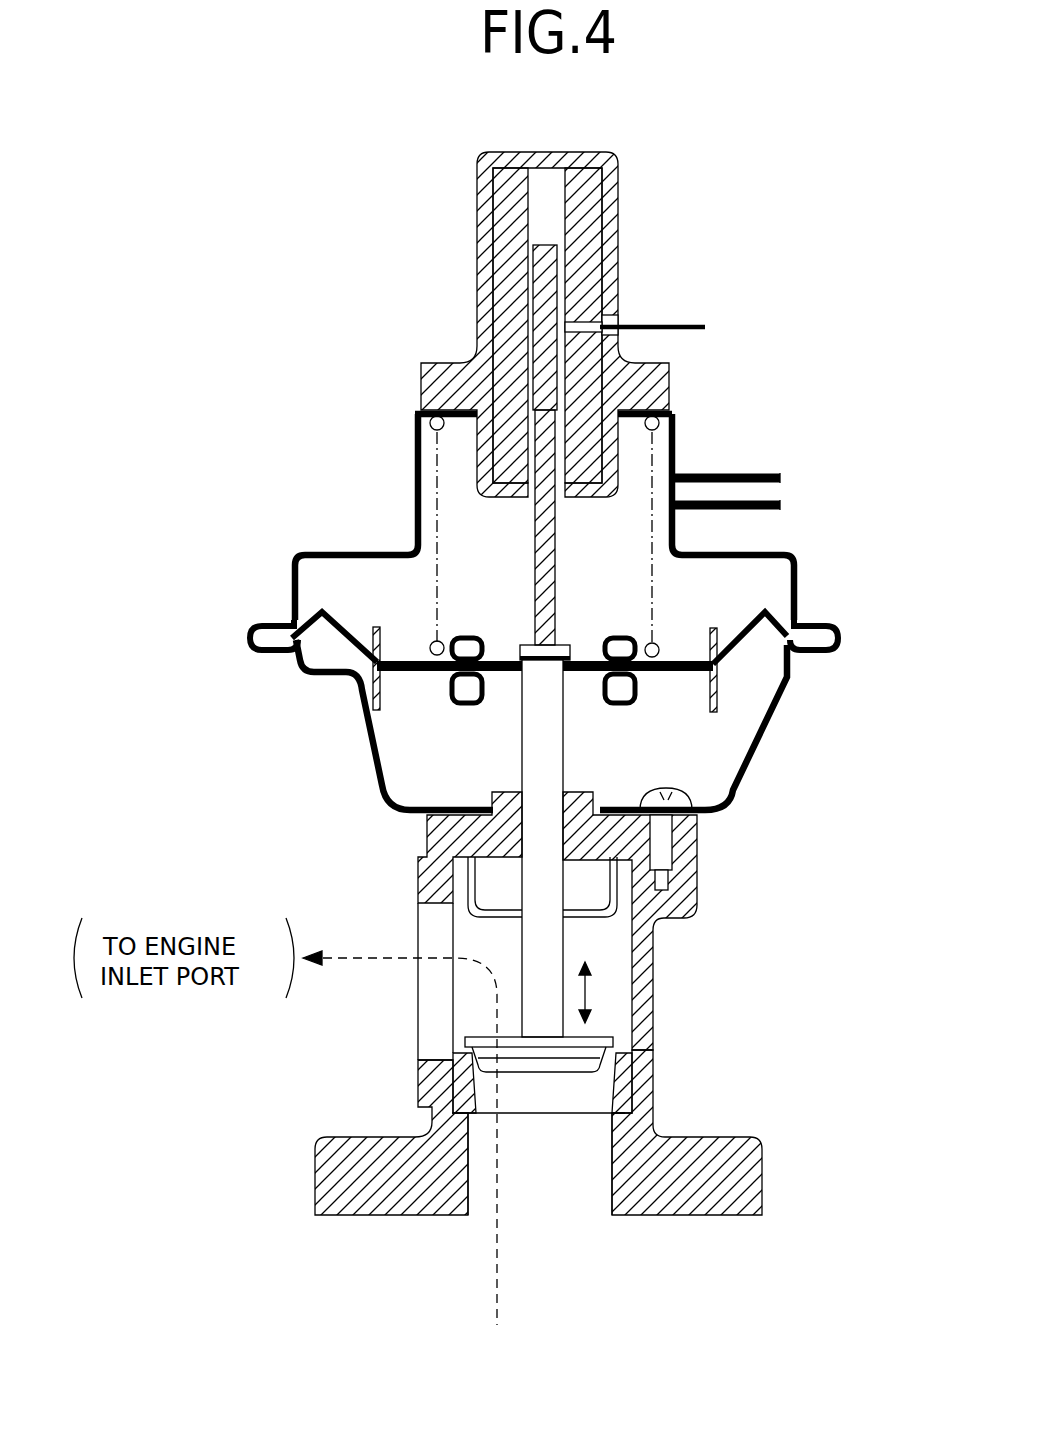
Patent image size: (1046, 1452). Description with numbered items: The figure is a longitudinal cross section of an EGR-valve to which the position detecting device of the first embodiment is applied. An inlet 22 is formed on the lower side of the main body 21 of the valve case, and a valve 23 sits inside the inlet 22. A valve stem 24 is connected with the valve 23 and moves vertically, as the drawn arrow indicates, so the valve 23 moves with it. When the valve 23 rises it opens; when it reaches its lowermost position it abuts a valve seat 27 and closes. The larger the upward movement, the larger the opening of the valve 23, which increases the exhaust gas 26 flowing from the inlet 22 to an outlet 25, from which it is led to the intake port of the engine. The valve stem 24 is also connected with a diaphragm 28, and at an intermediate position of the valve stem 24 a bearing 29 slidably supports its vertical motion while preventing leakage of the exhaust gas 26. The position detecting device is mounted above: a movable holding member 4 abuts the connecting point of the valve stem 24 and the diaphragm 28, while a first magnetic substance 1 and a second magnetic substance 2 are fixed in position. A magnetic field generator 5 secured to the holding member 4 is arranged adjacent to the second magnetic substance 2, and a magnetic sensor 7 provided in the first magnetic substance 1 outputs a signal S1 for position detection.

The first magnetic substance 1 is at (598, 214).
The second magnetic substance 2 is at (497, 290).
The holding member 4 is at (555, 580).
The magnetic field generator 5 is at (538, 245).
The magnetic sensor 7 is at (578, 316).
The signal S1 is at (688, 325).
The main body 21 is at (763, 1163).
The inlet 22 is at (555, 1215).
The valve 23 is at (596, 1040).
The valve stem 24 is at (548, 958).
The outlet 25 is at (430, 1007).
The exhaust gas 26 is at (365, 955).
The valve seat 27 is at (445, 1092).
The diaphragm 28 is at (733, 650).
The bearing 29 is at (455, 832).